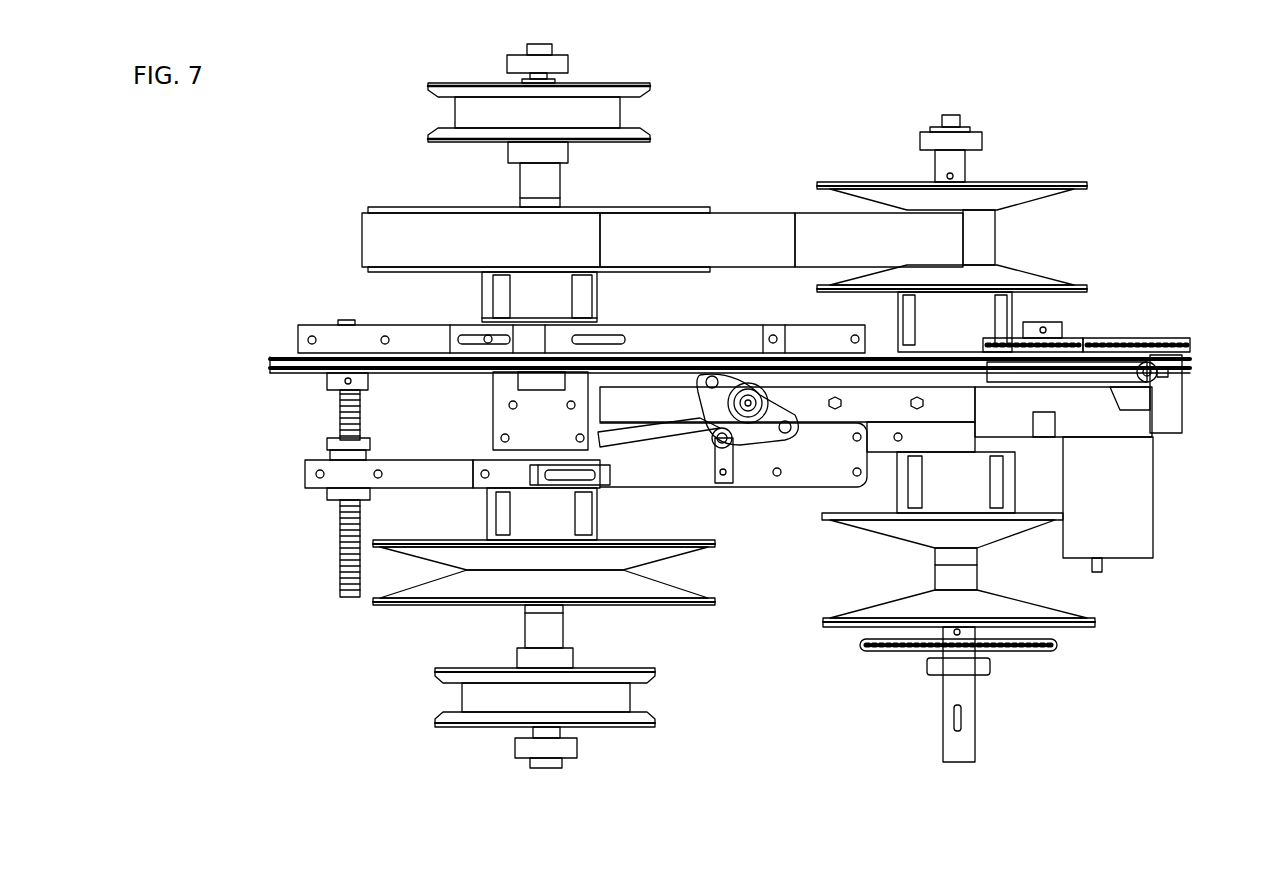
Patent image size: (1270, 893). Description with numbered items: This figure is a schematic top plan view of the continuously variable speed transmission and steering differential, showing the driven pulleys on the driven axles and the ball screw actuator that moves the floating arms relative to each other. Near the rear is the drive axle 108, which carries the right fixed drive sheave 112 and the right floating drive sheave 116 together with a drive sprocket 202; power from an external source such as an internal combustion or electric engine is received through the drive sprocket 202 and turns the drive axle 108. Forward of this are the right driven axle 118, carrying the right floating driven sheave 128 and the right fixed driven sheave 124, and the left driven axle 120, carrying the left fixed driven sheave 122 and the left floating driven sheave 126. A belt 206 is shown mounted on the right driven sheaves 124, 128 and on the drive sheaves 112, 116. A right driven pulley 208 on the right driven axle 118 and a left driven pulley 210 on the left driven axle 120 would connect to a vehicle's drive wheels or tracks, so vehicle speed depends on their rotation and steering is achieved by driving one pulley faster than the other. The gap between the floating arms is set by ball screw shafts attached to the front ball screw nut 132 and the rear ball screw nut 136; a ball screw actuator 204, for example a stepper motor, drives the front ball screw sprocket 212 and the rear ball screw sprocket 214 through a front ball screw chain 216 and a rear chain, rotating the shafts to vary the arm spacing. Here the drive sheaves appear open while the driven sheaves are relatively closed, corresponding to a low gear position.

The drive axle 108 is at (958, 165).
The right fixed drive sheave 112 is at (1030, 195).
The right floating drive sheave 116 is at (1018, 280).
The right driven axle 118 is at (545, 185).
The left driven axle 120 is at (538, 625).
The left fixed driven sheave 122 is at (655, 545).
The right fixed driven sheave 124 is at (397, 272).
The left floating driven sheave 126 is at (655, 588).
The right floating driven sheave 128 is at (404, 207).
The front ball screw nut 132 is at (343, 500).
The rear ball screw nut 136 is at (1130, 340).
The drive sprocket 202 is at (1010, 650).
The ball screw actuator 204 is at (1130, 535).
The belt 206 is at (752, 230).
The right driven pulley 208 is at (600, 95).
The left driven pulley 210 is at (600, 718).
The front ball screw sprocket 212 is at (282, 360).
The rear ball screw sprocket 214 is at (1080, 335).
The front ball screw chain 216 is at (470, 372).